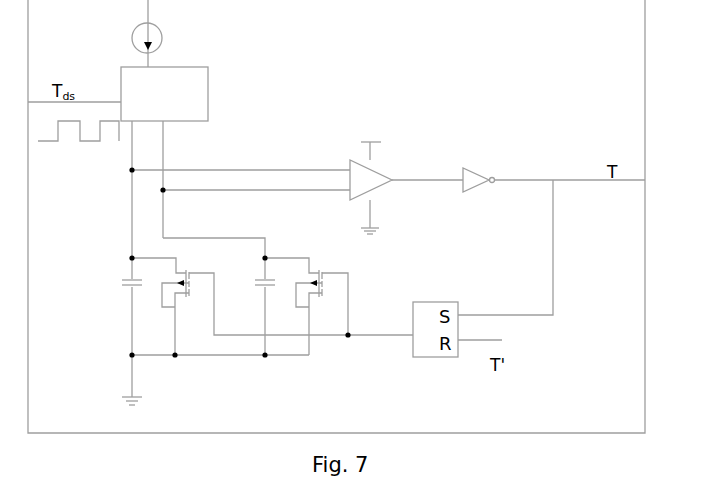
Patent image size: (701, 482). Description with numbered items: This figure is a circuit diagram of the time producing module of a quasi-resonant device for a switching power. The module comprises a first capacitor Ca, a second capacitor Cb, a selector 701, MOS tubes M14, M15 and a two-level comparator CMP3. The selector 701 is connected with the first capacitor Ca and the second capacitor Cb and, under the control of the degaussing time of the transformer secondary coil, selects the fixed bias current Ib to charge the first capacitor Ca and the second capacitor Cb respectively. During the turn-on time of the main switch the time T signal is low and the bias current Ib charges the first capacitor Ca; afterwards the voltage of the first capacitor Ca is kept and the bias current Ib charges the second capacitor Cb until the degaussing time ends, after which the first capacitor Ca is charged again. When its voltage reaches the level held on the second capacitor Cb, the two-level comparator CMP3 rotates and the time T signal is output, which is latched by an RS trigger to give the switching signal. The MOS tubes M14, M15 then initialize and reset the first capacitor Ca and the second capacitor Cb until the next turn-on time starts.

The selector 701 is at (164, 94).
The MOS tube M14 is at (200, 272).
The MOS tube M15 is at (333, 272).
The two-level comparator CMP3 is at (393, 188).
The first capacitor Ca is at (117, 289).
The second capacitor Cb is at (254, 289).
The bias current Ib is at (161, 38).